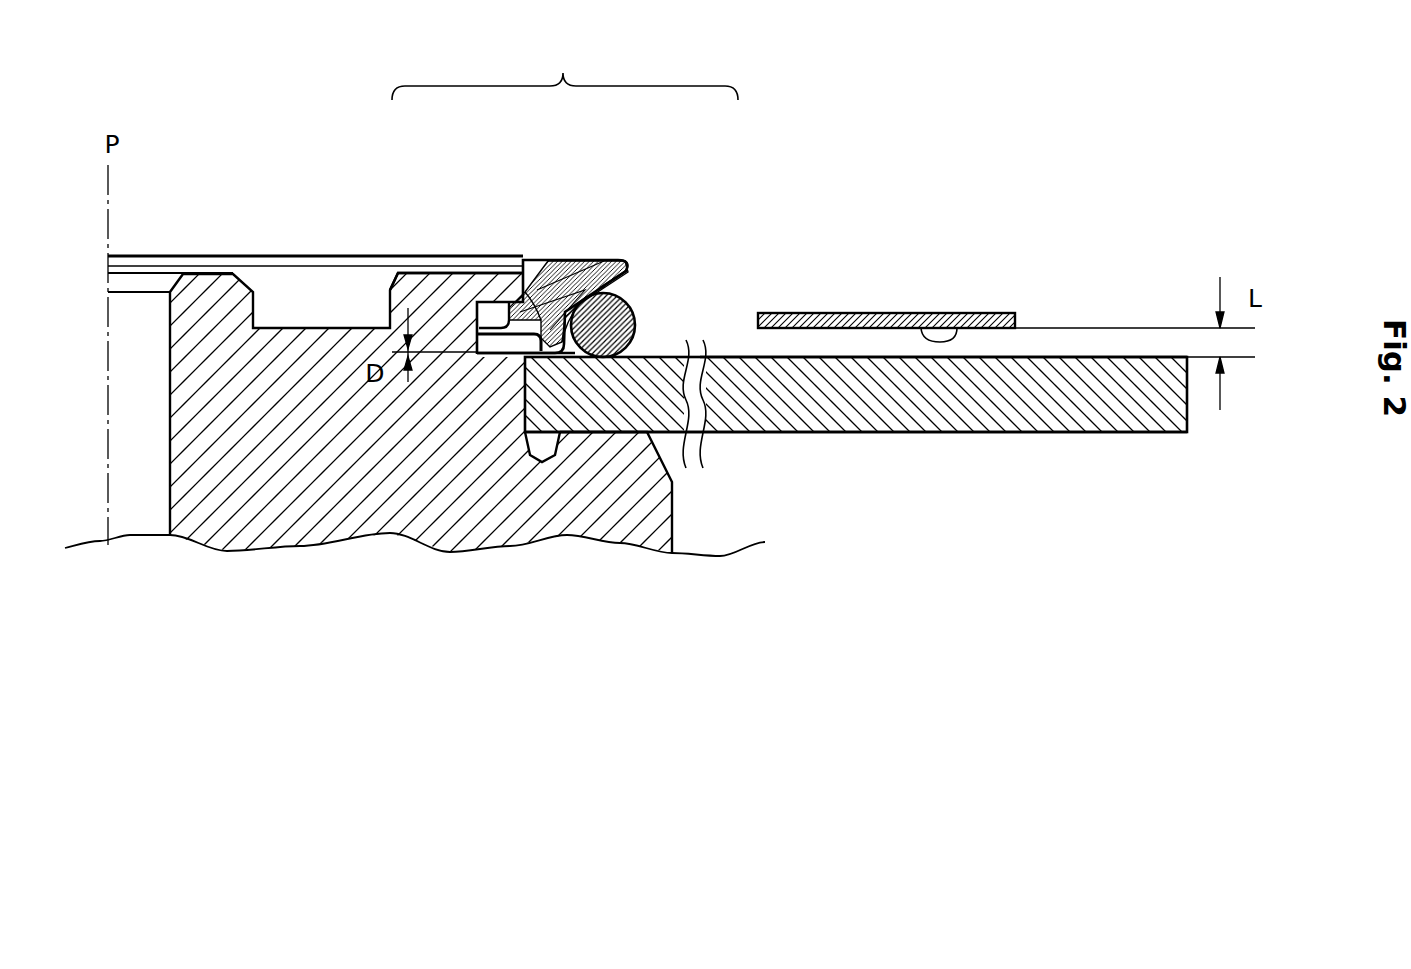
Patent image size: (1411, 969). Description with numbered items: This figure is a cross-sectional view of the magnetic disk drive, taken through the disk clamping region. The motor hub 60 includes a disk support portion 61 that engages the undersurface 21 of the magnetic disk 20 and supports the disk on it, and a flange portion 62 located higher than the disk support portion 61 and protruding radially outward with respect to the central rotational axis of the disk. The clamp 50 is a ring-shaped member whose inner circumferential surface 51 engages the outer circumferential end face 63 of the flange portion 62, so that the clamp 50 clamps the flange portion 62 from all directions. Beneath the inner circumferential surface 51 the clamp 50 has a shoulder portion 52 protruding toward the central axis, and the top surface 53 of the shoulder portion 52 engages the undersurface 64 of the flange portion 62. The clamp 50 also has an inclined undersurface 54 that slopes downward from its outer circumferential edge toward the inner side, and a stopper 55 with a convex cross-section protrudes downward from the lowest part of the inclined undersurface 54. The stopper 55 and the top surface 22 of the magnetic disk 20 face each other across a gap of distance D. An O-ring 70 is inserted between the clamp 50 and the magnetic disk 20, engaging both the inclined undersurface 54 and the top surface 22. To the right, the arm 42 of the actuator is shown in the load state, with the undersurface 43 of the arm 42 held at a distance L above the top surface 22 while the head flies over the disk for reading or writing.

The magnetic disk 20 is at (910, 417).
The undersurface of the magnetic disk 21 is at (777, 432).
The top surface of the magnetic disk 22 is at (973, 350).
The arm 42 is at (880, 313).
The undersurface of the arm 43 is at (958, 313).
The clamp 50 is at (565, 68).
The inner circumferential surface 51 is at (523, 263).
The shoulder portion 52 is at (553, 285).
The top surface of the shoulder portion 53 is at (547, 275).
The inclined undersurface 54 is at (627, 281).
The stopper 55 is at (593, 280).
The motor hub 60 is at (475, 503).
The disk support portion 61 is at (610, 445).
The flange portion 62 is at (497, 293).
The outer circumferential end face 63 is at (520, 273).
The undersurface of the flange portion 64 is at (477, 322).
The O-ring 70 is at (605, 323).